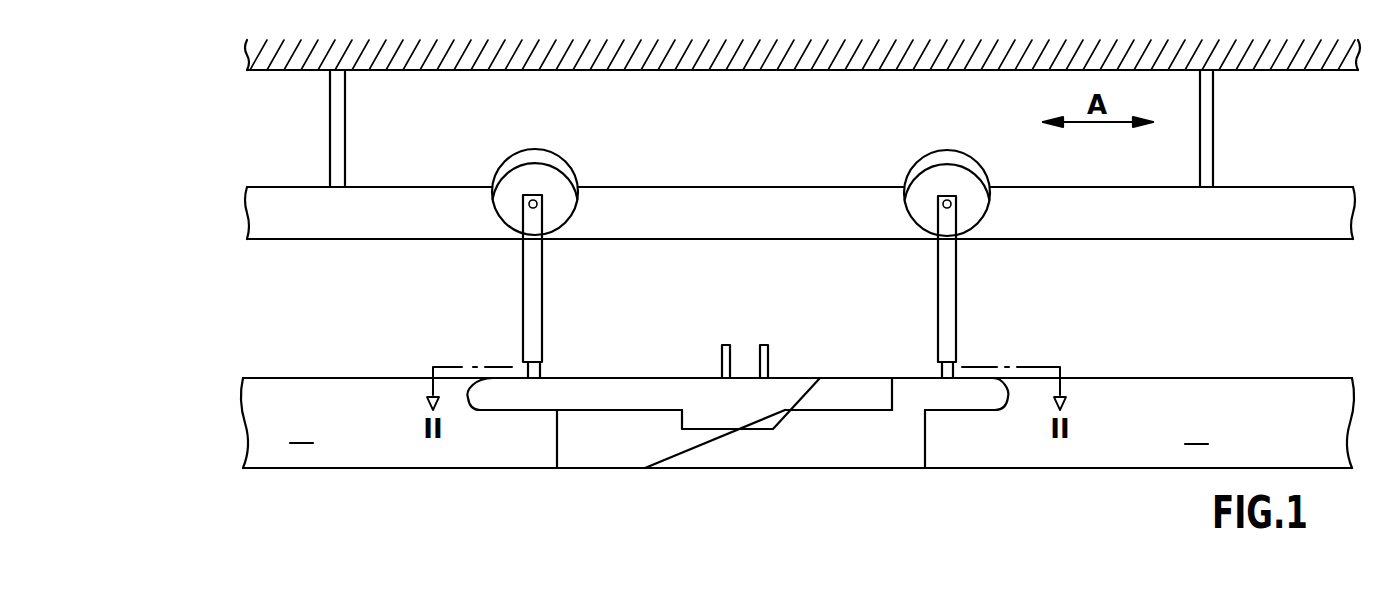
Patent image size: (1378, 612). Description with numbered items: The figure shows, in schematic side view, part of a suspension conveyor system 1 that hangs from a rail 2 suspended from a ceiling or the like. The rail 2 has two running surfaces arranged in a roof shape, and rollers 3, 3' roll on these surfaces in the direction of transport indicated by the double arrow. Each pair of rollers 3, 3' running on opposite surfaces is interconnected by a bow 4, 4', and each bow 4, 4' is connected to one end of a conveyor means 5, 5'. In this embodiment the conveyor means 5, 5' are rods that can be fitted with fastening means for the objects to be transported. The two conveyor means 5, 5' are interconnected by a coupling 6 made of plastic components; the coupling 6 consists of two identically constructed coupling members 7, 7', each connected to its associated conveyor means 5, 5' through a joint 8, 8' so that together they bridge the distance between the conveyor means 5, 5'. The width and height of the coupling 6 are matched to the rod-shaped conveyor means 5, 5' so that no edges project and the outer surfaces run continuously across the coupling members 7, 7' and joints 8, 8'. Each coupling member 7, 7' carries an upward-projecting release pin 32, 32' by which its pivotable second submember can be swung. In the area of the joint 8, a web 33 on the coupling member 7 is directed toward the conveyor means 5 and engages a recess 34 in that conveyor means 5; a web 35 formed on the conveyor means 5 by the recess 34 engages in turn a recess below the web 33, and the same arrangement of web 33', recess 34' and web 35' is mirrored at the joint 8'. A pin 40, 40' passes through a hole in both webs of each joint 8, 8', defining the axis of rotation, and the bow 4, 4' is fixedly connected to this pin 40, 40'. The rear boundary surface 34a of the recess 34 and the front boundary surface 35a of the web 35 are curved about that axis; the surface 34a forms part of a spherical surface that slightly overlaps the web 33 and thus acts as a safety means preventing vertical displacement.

The suspension conveyor system 1 is at (267, 478).
The rail 2 is at (378, 210).
The roller 3 is at (921, 164).
The roller 3' is at (563, 163).
The bow 4 is at (983, 287).
The bow 4' is at (492, 286).
The conveyor means 5 is at (1139, 423).
The conveyor means 5' is at (367, 423).
The coupling 6 is at (710, 480).
The coupling member 7 is at (805, 504).
The coupling member 7' is at (601, 506).
The joint 8 is at (978, 469).
The joint 8' is at (507, 492).
The release pin 32 is at (783, 315).
The release pin 32' is at (706, 315).
The web 33 is at (1036, 445).
The web 33' is at (464, 445).
The recess 34 is at (960, 461).
The recess 34' is at (581, 461).
The rear boundary surface of the recess 34a is at (992, 388).
The web 35 is at (980, 461).
The web 35' is at (560, 461).
The front boundary surface of the web 35a is at (927, 452).
The pin 40 is at (895, 356).
The pin 40' is at (591, 356).